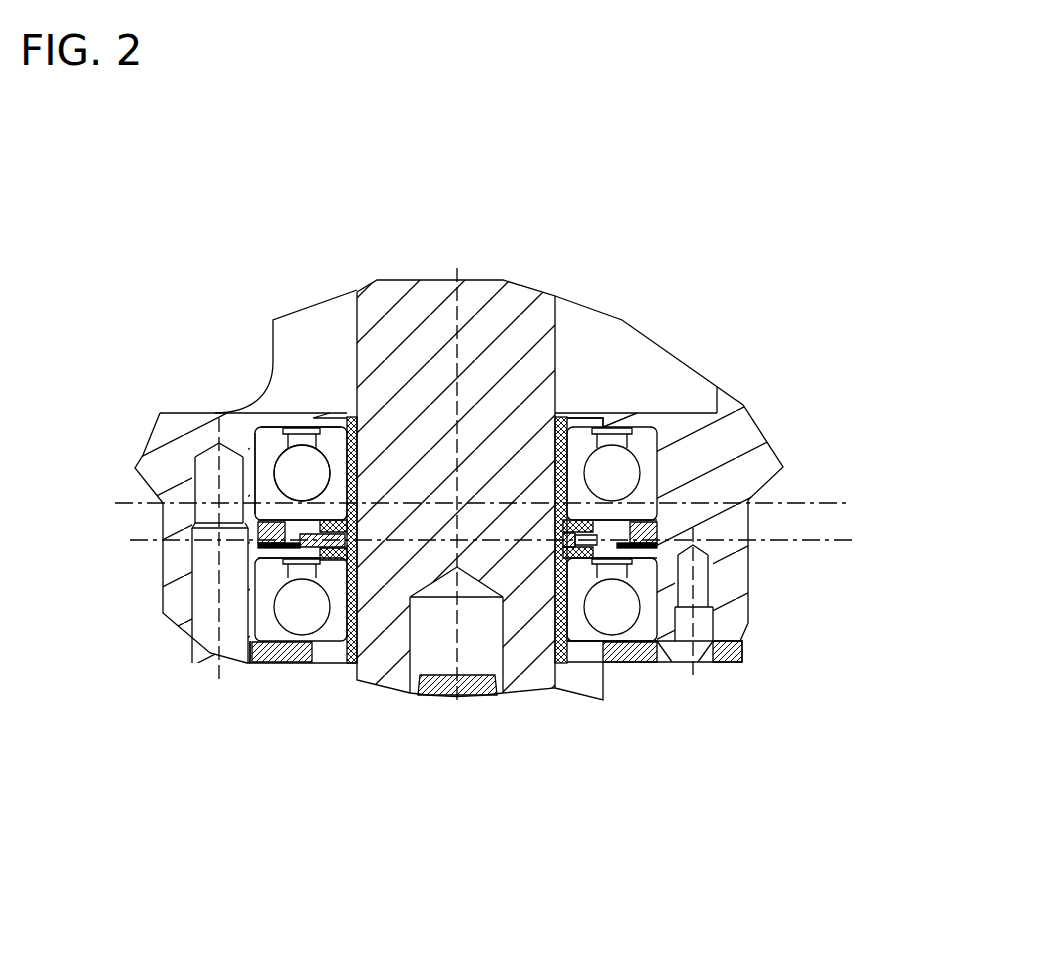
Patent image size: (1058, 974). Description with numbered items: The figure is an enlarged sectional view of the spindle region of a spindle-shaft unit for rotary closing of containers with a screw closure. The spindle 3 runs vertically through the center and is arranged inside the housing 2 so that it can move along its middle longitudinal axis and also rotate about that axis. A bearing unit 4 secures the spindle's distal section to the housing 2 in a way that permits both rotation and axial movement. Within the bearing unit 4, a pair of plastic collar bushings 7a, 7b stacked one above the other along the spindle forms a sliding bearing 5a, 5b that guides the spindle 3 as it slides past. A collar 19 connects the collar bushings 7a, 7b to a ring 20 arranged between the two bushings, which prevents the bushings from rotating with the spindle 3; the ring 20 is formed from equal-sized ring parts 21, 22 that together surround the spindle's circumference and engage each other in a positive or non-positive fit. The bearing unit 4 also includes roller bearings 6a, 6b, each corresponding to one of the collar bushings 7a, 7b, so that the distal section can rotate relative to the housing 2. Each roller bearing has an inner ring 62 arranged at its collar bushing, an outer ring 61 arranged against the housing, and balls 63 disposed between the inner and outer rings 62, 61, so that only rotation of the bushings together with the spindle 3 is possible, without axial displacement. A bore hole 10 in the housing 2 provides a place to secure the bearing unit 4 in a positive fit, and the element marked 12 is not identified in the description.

The housing 2 is at (728, 588).
The spindle 3 is at (492, 315).
The bearing unit 4 is at (777, 387).
The sliding bearing 5a is at (560, 410).
The sliding bearing 5b is at (557, 672).
The roller bearing 6a is at (632, 402).
The roller bearing 6b is at (617, 648).
The collar bushing 7a is at (337, 442).
The collar bushing 7b is at (353, 655).
The bore hole 10 is at (250, 578).
The spacer ring 12 is at (293, 645).
The collar 19 is at (590, 525).
The ring 20 is at (290, 544).
The ring part 21 is at (322, 546).
The ring part 22 is at (589, 524).
The outer ring 61 is at (240, 455).
The inner ring 62 is at (263, 445).
The balls 63 is at (287, 473).